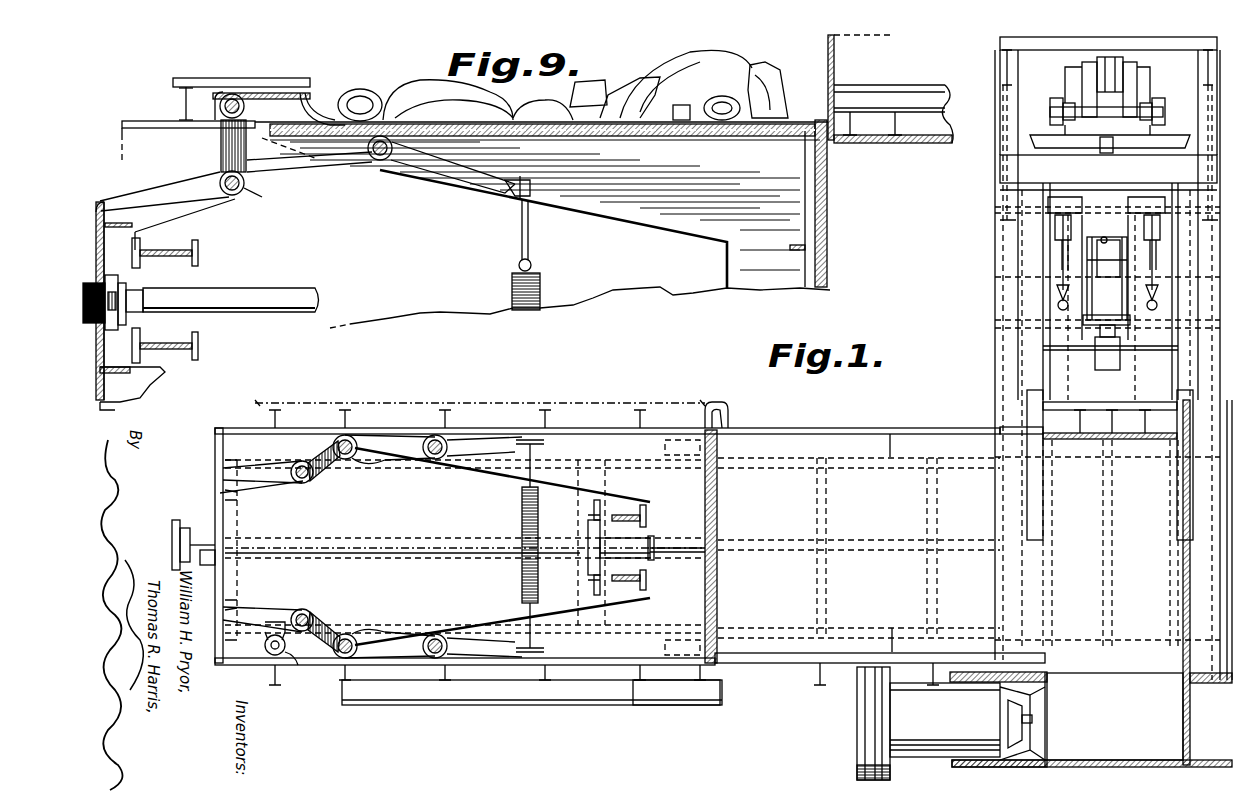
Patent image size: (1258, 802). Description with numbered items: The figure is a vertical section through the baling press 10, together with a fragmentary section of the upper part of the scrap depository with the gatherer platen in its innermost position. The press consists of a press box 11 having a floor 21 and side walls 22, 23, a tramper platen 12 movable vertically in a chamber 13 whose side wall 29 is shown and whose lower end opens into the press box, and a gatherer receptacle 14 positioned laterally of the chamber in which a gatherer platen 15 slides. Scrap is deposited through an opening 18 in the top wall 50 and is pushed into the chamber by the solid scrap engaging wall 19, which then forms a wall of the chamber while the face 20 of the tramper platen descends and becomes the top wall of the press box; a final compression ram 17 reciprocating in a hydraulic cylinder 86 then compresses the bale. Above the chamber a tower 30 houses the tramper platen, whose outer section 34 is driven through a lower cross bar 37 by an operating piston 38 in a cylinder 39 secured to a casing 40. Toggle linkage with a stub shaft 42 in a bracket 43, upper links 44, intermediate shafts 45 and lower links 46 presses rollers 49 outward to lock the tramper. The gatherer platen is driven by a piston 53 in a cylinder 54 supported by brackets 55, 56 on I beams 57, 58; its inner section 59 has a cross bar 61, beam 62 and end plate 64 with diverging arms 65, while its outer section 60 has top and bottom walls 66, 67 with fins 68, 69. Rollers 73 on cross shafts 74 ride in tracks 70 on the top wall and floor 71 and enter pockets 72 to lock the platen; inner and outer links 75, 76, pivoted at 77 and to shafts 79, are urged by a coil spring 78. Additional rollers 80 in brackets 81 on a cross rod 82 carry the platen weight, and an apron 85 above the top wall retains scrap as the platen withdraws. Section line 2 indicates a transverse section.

In FIG. 1, the baling press 10 is at (992, 282).
In FIG. 1, the press box 11 is at (1197, 736).
In FIG. 9, the tramper platen 12 is at (864, 81).
In FIG. 1, the tramper platen 12 is at (1036, 379).
In FIG. 1, the housing or chamber 13 is at (1197, 466).
In FIG. 1, the gatherer receptacle 14 is at (927, 441).
In FIG. 1, the gatherer platen 15 is at (565, 421).
In FIG. 1, the final compression ram or piston 17 is at (1041, 723).
In FIG. 1, the opening 18 is at (879, 428).
In FIG. 9, the scrap engaging wall 19 is at (827, 232).
In FIG. 1, the scrap engaging wall 19 is at (718, 511).
In FIG. 9, the wall or face of tramper platen 20 is at (889, 143).
In FIG. 1, the wall or face of tramper platen 20 is at (1127, 441).
In FIG. 1, the floor 21 is at (1107, 761).
In FIG. 1, the side wall 22 is at (1194, 711).
In FIG. 1, the side wall 23 is at (1036, 746).
In FIG. 1, the side wall 29 is at (1194, 521).
In FIG. 1, the tower or frame 30 is at (995, 224).
In FIG. 1, the outer section of tramper platen 34 is at (1206, 281).
In FIG. 1, the lower cross bar 37 is at (1096, 356).
In FIG. 1, the operating piston 38 is at (1124, 241).
In FIG. 1, the cylinder 39 is at (1102, 273).
In FIG. 1, the casing 40 is at (1056, 296).
In FIG. 1, the stub shaft 42 is at (1136, 65).
In FIG. 1, the bracket 43 is at (1113, 57).
In FIG. 1, the upper links 44 is at (1086, 91).
In FIG. 1, the intermediate shaft 45 is at (1166, 119).
In FIG. 1, the lower links 46 is at (1055, 239).
In FIG. 1, the wheels or rollers 49 is at (1057, 99).
In FIG. 1, the top wall 50 is at (497, 414).
In FIG. 9, the operating piston 53 is at (244, 292).
In FIG. 1, the operating piston 53 is at (650, 543).
In FIG. 9, the cylinder 54 is at (86, 290).
In FIG. 1, the cylinder 54 is at (430, 539).
In FIG. 9, the bracket 55 is at (126, 375).
In FIG. 1, the bracket 55 is at (598, 579).
In FIG. 1, the bracket 56 is at (209, 530).
In FIG. 9, the I beam 57 is at (154, 256).
In FIG. 1, the I beam 57 is at (630, 515).
In FIG. 9, the I beam 58 is at (194, 344).
In FIG. 1, the I beam 58 is at (634, 583).
In FIG. 1, the inner section of gatherer platen 59 is at (430, 557).
In FIG. 9, the outer section of gatherer platen 60 is at (630, 230).
In FIG. 1, the outer section of gatherer platen 60 is at (612, 641).
In FIG. 1, the cross bar 61 is at (654, 561).
In FIG. 1, the longitudinally extending beam 62 is at (627, 591).
In FIG. 9, the end plate 64 is at (142, 228).
In FIG. 1, the end plate 64 is at (242, 501).
In FIG. 9, the diverging arms 65 is at (192, 195).
In FIG. 1, the diverging arms 65 is at (277, 479).
In FIG. 9, the top wall 66 is at (722, 122).
In FIG. 1, the top wall 66 is at (622, 440).
In FIG. 1, the bottom wall 67 is at (627, 660).
In FIG. 9, the upper fin or rib 68 is at (574, 180).
In FIG. 1, the upper fin or rib 68 is at (518, 456).
In FIG. 1, the lower fin or rib 69 is at (510, 622).
In FIG. 9, the rails or tracks 70 is at (156, 120).
In FIG. 1, the rails or tracks 70 is at (387, 428).
In FIG. 1, the floor 71 is at (529, 682).
In FIG. 9, the pocket 72 is at (225, 92).
In FIG. 1, the pocket 72 is at (662, 432).
In FIG. 9, the rollers 73 is at (241, 97).
In FIG. 1, the rollers 73 is at (342, 435).
In FIG. 9, the cross shaft 74 is at (222, 136).
In FIG. 1, the cross shaft 74 is at (354, 462).
In FIG. 9, the inner links 75 is at (475, 180).
In FIG. 1, the inner links 75 is at (404, 462).
In FIG. 9, the outer links 76 is at (246, 180).
In FIG. 1, the outer links 76 is at (320, 456).
In FIG. 9, the pivot 77 is at (381, 161).
In FIG. 1, the pivot 77 is at (438, 460).
In FIG. 9, the coil spring 78 is at (540, 286).
In FIG. 1, the coil spring 78 is at (522, 520).
In FIG. 9, the shaft 79 is at (248, 190).
In FIG. 1, the shaft 79 is at (309, 481).
In FIG. 1, the rollers 80 is at (256, 672).
In FIG. 1, the bracket 81 is at (301, 667).
In FIG. 1, the cross rod 82 is at (269, 639).
In FIG. 9, the shield or apron 85 is at (313, 105).
In FIG. 1, the shield or apron 85 is at (725, 428).
In FIG. 1, the hydraulic cylinder 86 is at (912, 723).
In FIG. 1, the section line 2 is at (155, 530).